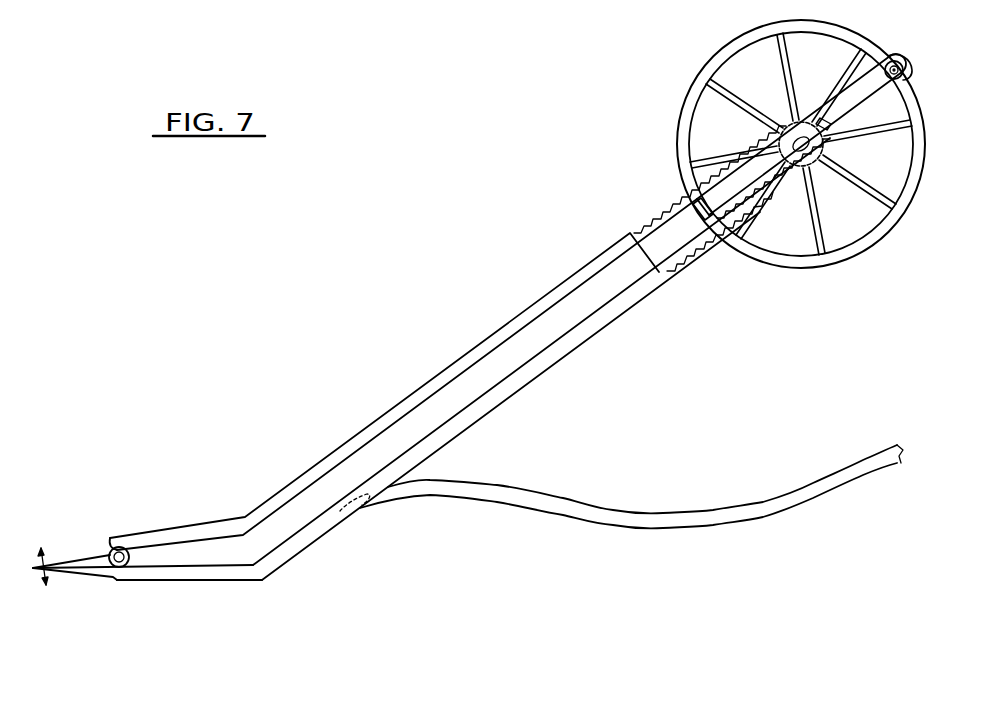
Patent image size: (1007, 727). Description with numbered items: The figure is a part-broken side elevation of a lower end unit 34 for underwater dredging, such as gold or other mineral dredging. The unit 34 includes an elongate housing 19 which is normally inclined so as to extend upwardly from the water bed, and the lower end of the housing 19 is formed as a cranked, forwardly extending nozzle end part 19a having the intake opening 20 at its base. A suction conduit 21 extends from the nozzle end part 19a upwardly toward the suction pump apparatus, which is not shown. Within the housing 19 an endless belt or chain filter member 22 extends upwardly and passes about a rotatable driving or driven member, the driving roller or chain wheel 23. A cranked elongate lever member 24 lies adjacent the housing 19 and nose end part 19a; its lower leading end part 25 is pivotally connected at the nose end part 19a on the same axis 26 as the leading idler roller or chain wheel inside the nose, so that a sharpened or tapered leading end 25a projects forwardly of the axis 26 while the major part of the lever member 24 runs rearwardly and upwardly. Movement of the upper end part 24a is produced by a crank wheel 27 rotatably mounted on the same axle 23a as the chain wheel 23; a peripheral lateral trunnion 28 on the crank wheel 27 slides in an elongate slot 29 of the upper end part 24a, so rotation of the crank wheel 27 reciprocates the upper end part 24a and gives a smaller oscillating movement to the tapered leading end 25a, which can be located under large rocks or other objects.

The elongate housing 19 is at (400, 398).
The cranked forwardly extending nozzle end part 19a is at (190, 533).
The intake opening 20 is at (213, 583).
The suction conduit 21 is at (615, 512).
The endless belt or chain filter member 22 is at (672, 265).
The driving roller or chain wheel 23 is at (860, 196).
The axle 23a is at (757, 137).
The cranked elongate lever member 24 is at (403, 428).
The upper end part of the lever member 24a is at (828, 129).
The lower leading end part 25 is at (169, 560).
The sharpened or tapered leading end 25a is at (90, 566).
The pivot axis 26 is at (110, 557).
The crank wheel 27 is at (870, 240).
The peripheral lateral trunnion 28 is at (905, 75).
The elongate slot 29 is at (858, 103).
The unit 34 is at (470, 272).